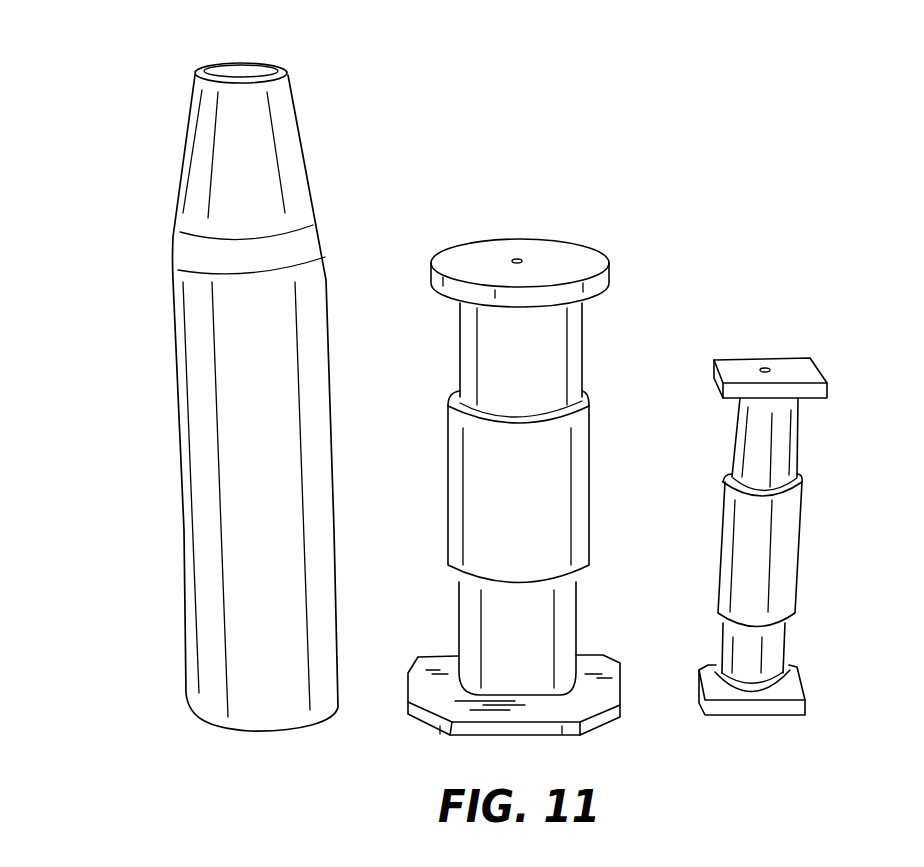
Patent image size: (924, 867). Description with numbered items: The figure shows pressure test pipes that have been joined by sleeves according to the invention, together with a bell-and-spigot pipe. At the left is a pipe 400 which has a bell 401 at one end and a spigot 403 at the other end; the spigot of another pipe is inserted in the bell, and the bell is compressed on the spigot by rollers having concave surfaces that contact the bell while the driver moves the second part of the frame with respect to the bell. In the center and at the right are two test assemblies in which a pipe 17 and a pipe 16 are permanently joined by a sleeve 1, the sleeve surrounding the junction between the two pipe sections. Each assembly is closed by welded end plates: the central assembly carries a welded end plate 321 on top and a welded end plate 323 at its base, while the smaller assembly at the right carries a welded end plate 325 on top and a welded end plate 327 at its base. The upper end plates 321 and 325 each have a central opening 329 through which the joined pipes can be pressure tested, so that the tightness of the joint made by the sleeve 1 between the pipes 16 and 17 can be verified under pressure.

The pipe 400 is at (142, 77).
The bell 401 is at (183, 655).
The spigot 403 is at (292, 102).
The end plate 321 is at (594, 246).
The central opening 329 is at (517, 258).
The pipe 17 is at (582, 345).
The sleeve 1 is at (590, 440).
The pipe 16 is at (576, 614).
The end plate 323 is at (612, 723).
The end plate 325 is at (818, 356).
The end plate 327 is at (803, 716).